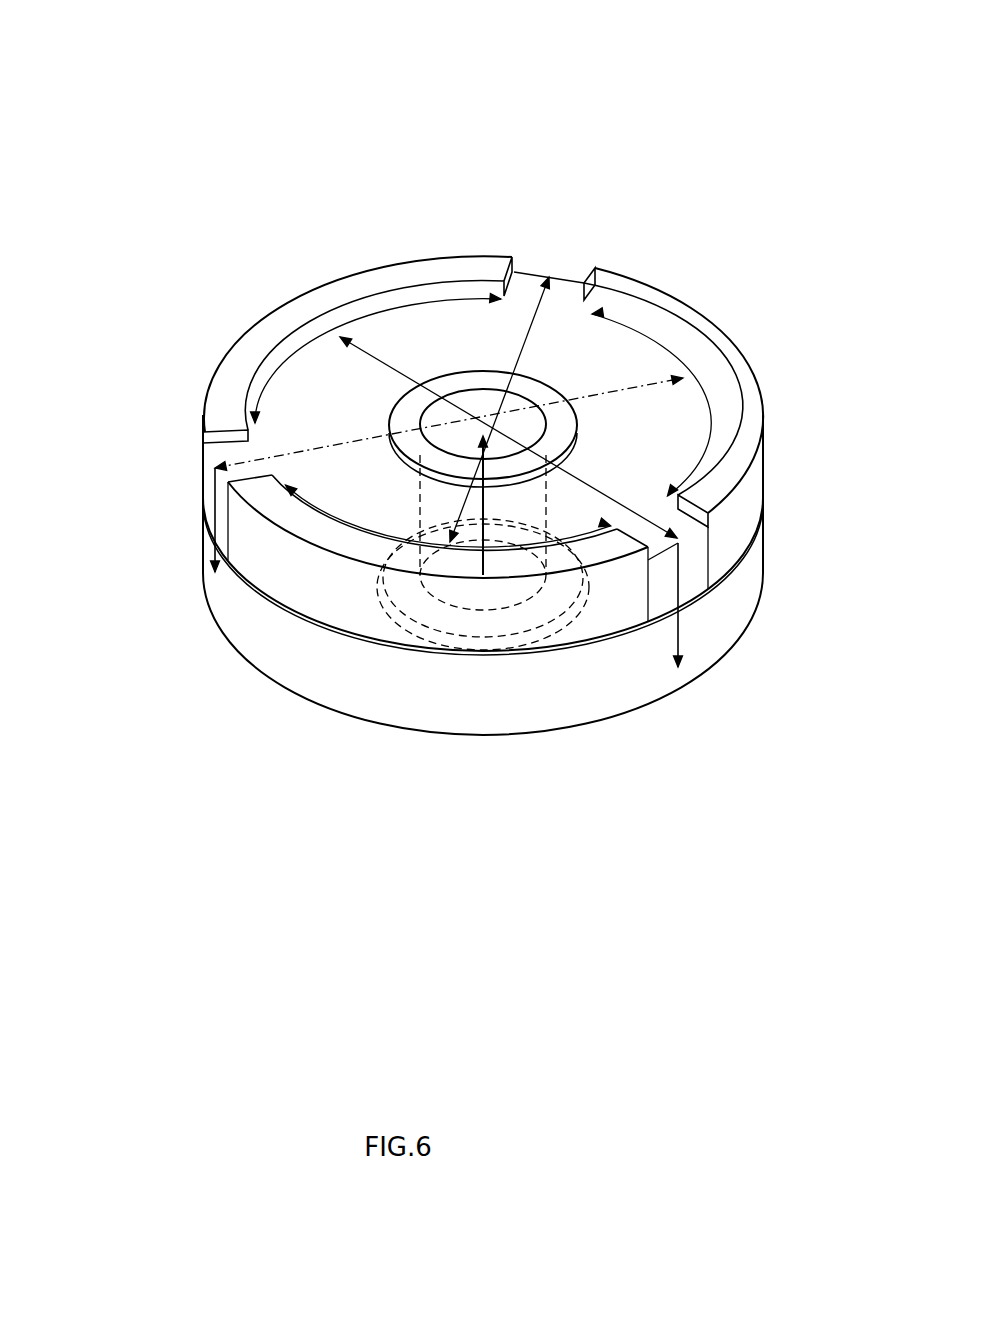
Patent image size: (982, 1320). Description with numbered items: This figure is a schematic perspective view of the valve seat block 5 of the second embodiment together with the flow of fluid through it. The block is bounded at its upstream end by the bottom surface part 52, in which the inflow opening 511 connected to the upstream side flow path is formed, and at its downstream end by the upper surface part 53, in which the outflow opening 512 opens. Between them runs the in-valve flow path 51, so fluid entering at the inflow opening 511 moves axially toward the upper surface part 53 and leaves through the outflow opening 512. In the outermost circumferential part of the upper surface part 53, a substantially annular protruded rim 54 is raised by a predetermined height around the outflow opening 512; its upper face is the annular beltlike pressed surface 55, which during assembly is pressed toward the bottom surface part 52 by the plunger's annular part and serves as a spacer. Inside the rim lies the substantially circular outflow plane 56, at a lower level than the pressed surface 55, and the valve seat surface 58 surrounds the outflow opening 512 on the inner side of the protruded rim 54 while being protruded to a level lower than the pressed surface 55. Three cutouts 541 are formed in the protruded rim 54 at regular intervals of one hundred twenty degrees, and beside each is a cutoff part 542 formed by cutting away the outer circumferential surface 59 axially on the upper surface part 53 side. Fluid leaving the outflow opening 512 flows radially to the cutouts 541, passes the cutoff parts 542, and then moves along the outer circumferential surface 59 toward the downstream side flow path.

The valve seat block 5 is at (288, 134).
The in-valve flow path 51 is at (413, 490).
The inflow opening 511 is at (481, 655).
The outflow opening 512 is at (478, 398).
The bottom surface part 52 is at (487, 766).
The upper surface part 53 is at (499, 229).
The protruded rim 54 is at (329, 279).
The cutout 541 is at (527, 278).
The cutoff part 542 is at (588, 266).
The pressed surface 55 is at (288, 318).
The outflow plane 56 is at (409, 360).
The valve seat surface 58 is at (548, 440).
The outer circumferential surface 59 is at (192, 543).